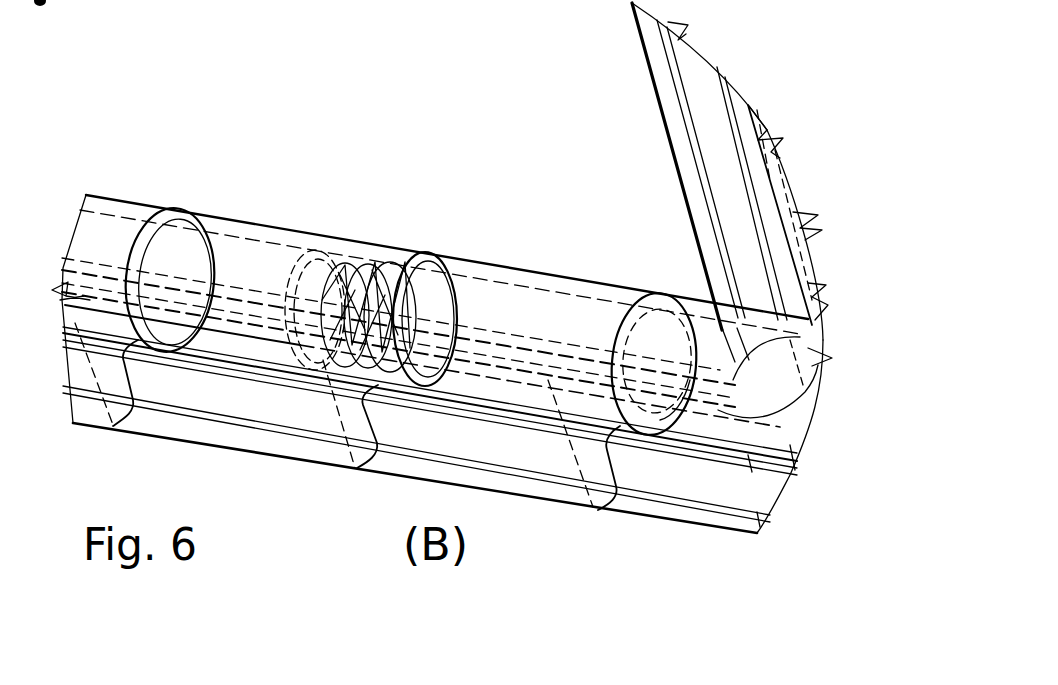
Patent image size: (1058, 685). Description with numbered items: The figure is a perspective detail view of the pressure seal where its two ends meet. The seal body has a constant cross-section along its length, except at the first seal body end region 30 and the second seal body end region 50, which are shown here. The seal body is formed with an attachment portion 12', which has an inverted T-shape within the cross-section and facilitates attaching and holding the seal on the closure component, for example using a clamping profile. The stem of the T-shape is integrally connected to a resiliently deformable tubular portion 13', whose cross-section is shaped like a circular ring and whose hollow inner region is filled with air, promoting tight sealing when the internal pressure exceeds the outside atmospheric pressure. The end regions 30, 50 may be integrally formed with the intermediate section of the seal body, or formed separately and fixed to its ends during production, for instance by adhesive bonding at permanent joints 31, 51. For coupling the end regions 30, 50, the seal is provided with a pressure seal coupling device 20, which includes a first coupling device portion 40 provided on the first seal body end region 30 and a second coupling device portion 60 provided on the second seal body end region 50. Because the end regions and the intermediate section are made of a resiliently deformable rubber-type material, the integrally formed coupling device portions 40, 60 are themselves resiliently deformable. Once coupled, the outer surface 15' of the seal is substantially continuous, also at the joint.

The first seal body end region 30 is at (538, 253).
The permanent joint 51 is at (192, 198).
The second coupling device portion 60 is at (336, 248).
The second seal body end region 50 is at (351, 207).
The outer surface 15' is at (387, 225).
The pressure seal coupling device 20 is at (412, 243).
The first coupling device portion 40 is at (427, 282).
The tubular portion 13' is at (652, 325).
The permanent joint 31 is at (682, 420).
The attachment portion 12' is at (598, 489).